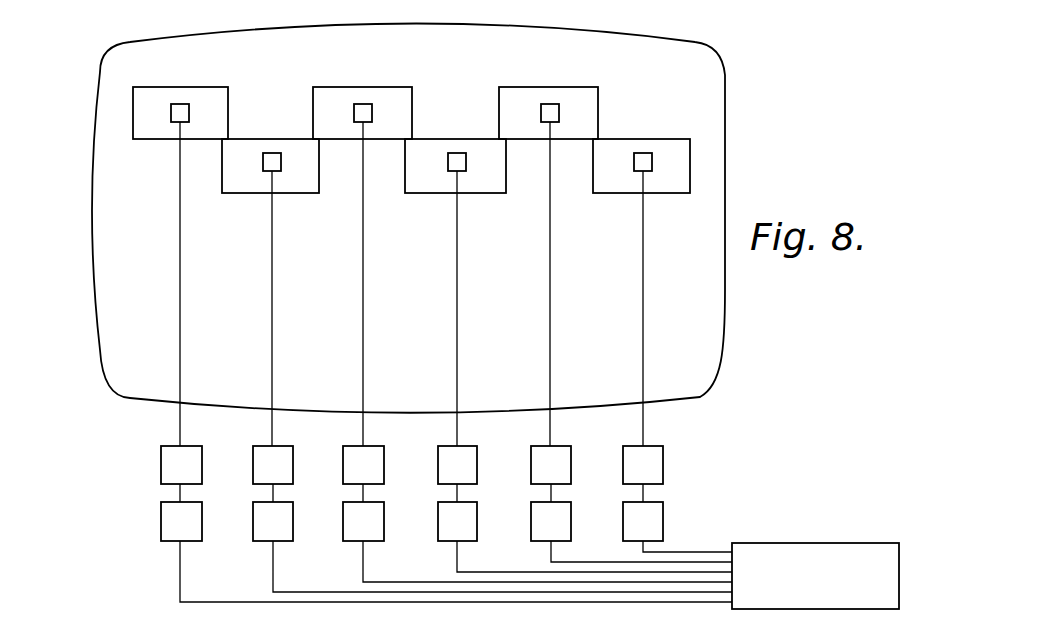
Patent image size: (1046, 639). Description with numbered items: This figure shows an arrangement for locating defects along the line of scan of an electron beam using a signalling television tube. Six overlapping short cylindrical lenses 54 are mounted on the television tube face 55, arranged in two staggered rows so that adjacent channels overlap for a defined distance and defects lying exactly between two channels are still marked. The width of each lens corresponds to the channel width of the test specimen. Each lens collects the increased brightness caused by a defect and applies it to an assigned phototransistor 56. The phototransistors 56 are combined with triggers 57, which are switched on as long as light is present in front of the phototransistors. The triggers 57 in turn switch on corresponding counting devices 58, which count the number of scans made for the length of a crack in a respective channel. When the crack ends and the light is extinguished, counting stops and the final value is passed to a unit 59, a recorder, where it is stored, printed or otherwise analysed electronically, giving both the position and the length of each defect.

The cylindrical lenses 54 is at (340, 87).
The television tube face 55 is at (116, 338).
The phototransistors 56 is at (270, 153).
The triggers 57 is at (173, 459).
The counting devices 58 is at (170, 518).
The unit 59 is at (770, 543).